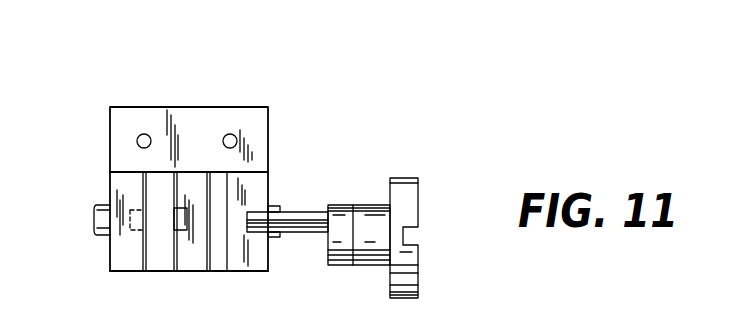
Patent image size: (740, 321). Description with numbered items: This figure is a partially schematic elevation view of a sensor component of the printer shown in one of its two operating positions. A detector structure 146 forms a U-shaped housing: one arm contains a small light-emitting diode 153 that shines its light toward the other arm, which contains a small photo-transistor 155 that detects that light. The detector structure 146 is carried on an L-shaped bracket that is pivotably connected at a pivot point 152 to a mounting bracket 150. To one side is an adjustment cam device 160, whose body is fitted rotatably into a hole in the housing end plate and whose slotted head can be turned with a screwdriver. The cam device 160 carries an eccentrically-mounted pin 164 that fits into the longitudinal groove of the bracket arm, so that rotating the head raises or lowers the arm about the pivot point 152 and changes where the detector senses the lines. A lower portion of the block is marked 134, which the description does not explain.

The mounting bracket 150 is at (233, 113).
The detector structure 146 is at (132, 260).
The lower right block portion 134 is at (262, 253).
The pivot point 152 is at (95, 228).
The light-emitting diode 153 is at (140, 210).
The photo-transistor 155 is at (181, 232).
The eccentrically-mounted pin 164 is at (298, 215).
The adjustment cam device 160 is at (411, 178).